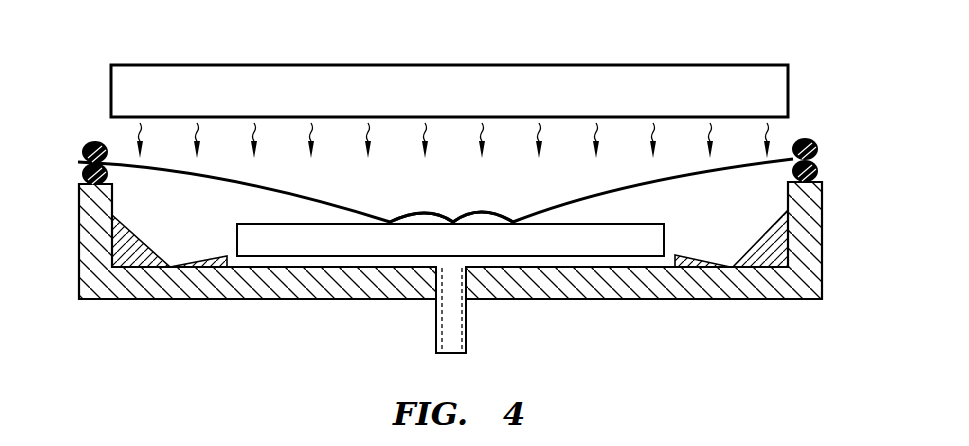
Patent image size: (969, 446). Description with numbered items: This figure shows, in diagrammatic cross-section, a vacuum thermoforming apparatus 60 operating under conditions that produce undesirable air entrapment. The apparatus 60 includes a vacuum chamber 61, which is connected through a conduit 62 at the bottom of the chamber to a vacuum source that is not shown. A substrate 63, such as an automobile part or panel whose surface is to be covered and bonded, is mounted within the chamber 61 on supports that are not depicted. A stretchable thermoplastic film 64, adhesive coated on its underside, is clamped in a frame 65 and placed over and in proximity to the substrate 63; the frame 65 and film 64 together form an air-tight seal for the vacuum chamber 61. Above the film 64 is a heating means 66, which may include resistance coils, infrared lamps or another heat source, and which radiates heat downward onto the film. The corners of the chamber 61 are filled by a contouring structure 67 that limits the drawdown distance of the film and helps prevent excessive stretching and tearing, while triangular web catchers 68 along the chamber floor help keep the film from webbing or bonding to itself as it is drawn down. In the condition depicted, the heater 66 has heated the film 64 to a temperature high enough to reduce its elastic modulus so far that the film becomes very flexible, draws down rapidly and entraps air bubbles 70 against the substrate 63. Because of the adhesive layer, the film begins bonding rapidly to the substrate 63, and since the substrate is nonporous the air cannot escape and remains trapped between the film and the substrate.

The apparatus 60 is at (834, 230).
The vacuum chamber 61 is at (743, 290).
The conduit 62 is at (467, 330).
The substrate 63 is at (340, 237).
The thermoplastic film 64 is at (202, 178).
The frame 65 is at (85, 140).
The heating means 66 is at (711, 73).
The contouring structure 67 is at (770, 227).
The web catchers 68 is at (693, 258).
The air bubbles 70 is at (436, 220).